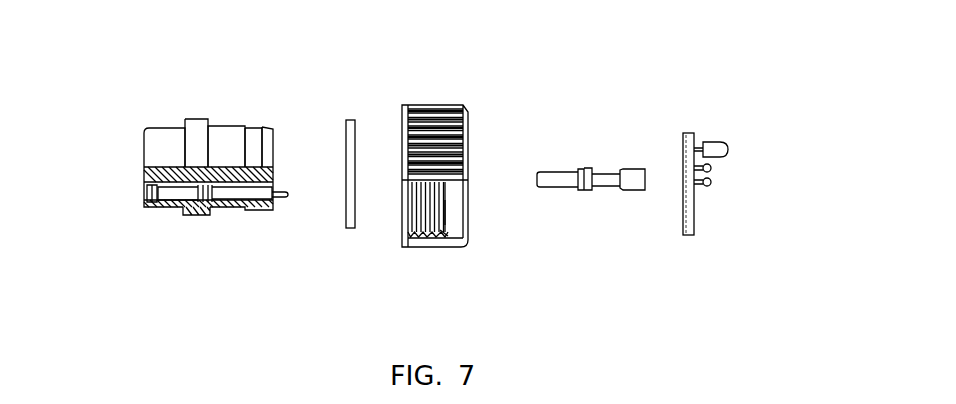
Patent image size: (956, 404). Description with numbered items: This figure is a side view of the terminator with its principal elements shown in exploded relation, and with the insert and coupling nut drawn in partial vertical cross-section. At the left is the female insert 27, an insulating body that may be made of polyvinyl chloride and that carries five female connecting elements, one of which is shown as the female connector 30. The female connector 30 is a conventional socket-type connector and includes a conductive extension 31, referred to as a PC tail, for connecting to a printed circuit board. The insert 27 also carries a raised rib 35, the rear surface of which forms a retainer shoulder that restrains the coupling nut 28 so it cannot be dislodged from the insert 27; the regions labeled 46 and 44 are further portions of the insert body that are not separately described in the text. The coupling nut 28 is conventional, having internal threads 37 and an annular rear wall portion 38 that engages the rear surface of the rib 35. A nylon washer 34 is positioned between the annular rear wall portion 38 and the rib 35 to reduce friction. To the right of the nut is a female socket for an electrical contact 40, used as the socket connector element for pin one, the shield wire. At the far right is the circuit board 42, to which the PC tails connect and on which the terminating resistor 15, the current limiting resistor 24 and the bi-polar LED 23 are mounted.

The female insert 27 is at (228, 119).
The raised rib 35 is at (198, 119).
The body section 46 is at (255, 128).
The flange 44 is at (277, 142).
The female connecting element 30 is at (199, 202).
The conductive extension 31 is at (285, 198).
The nylon washer 34 is at (346, 231).
The coupling nut 28 is at (428, 246).
The annular rear wall portion 38 is at (463, 223).
The internal threads 37 is at (445, 233).
The female socket for an electrical contact 40 is at (602, 165).
The circuit board 42 is at (696, 131).
The bi-polar LED 23 is at (723, 149).
The current limiting resistor 24 is at (710, 169).
The terminating resistor 15 is at (709, 184).